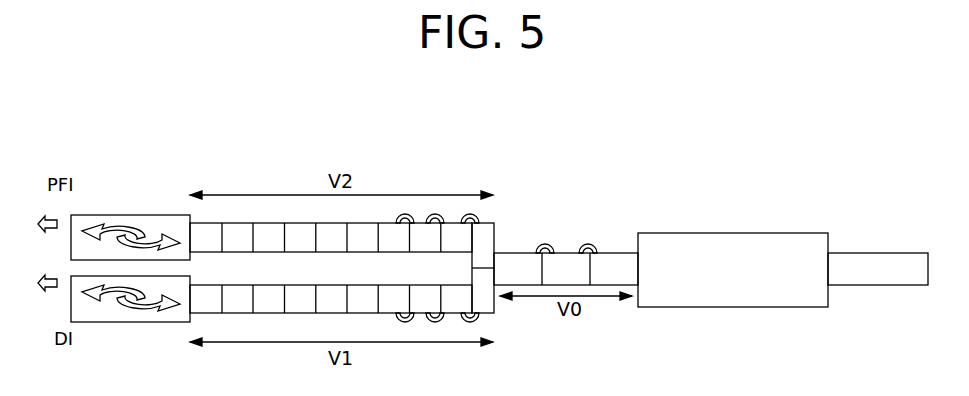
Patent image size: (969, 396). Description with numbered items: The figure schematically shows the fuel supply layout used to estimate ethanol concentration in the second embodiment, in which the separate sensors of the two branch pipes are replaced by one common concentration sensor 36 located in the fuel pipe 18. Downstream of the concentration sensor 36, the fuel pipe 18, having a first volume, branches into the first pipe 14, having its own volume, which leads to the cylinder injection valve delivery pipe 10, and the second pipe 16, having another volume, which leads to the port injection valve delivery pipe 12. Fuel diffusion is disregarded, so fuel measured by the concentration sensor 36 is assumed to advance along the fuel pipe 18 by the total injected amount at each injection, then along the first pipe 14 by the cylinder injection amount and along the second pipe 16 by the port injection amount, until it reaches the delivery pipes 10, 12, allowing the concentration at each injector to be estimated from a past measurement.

The cylinder injection valve delivery pipe 10 is at (155, 322).
The port injection valve delivery pipe 12 is at (157, 215).
The first pipe 14 is at (462, 298).
The second pipe 16 is at (462, 240).
The fuel pipe 18 is at (618, 252).
The concentration sensor 36 is at (730, 233).